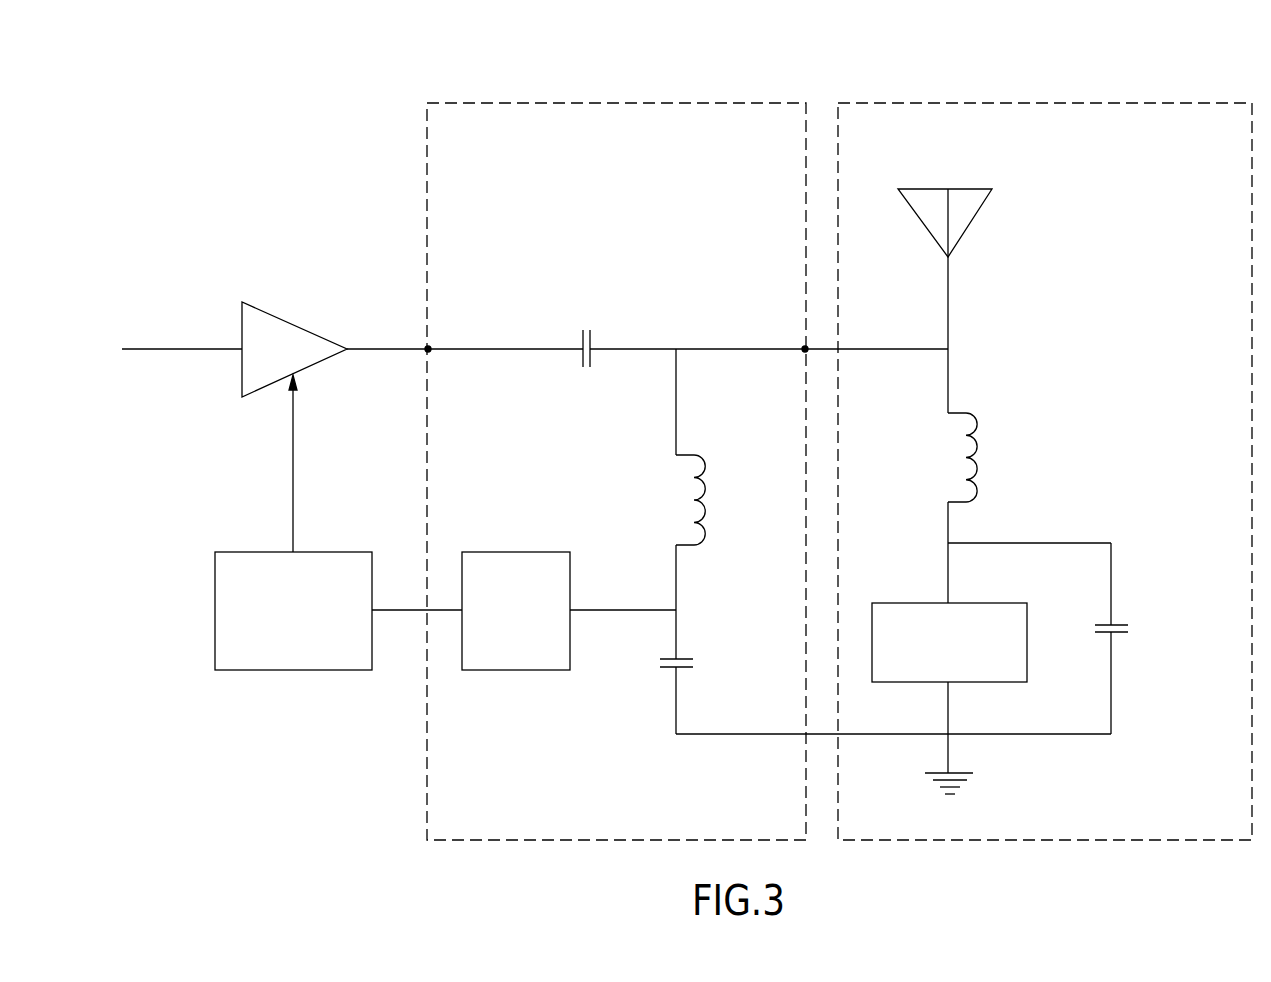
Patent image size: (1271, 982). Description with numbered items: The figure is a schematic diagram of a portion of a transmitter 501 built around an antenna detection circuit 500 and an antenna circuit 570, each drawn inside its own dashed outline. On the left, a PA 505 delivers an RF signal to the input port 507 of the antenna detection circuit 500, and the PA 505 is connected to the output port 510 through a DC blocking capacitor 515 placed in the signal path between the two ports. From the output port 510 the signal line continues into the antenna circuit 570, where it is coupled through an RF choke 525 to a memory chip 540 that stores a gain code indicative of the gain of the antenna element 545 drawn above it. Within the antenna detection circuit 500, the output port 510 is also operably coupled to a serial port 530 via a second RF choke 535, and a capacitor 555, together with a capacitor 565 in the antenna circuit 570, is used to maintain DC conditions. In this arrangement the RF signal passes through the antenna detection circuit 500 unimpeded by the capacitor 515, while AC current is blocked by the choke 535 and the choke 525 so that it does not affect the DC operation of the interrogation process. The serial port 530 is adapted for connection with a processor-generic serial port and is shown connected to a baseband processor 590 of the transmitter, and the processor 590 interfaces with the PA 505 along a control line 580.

The transmitter 501 is at (310, 85).
The antenna detection circuit 500 is at (712, 103).
The antenna circuit 570 is at (1162, 103).
The PA 505 is at (289, 323).
The input port 507 is at (430, 346).
The output port 510 is at (804, 346).
The DC blocking capacitor 515 is at (591, 340).
The RF choke 535 is at (703, 490).
The capacitor 555 is at (678, 668).
The serial port 530 is at (503, 552).
The baseband processor 590 is at (318, 552).
The control line 580 is at (295, 415).
The antenna element 545 is at (975, 215).
The RF choke 525 is at (978, 447).
The memory chip 540 is at (970, 603).
The capacitor 565 is at (1114, 633).